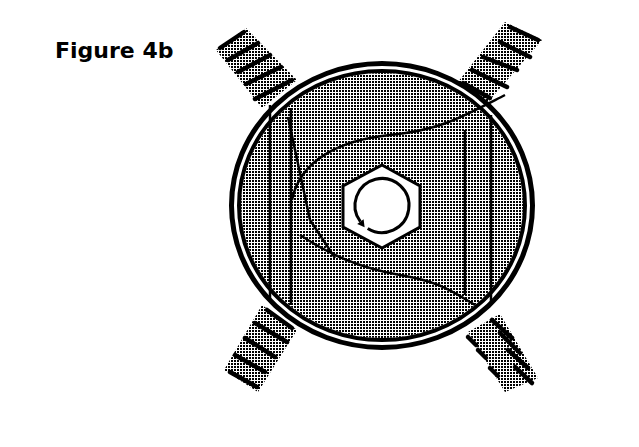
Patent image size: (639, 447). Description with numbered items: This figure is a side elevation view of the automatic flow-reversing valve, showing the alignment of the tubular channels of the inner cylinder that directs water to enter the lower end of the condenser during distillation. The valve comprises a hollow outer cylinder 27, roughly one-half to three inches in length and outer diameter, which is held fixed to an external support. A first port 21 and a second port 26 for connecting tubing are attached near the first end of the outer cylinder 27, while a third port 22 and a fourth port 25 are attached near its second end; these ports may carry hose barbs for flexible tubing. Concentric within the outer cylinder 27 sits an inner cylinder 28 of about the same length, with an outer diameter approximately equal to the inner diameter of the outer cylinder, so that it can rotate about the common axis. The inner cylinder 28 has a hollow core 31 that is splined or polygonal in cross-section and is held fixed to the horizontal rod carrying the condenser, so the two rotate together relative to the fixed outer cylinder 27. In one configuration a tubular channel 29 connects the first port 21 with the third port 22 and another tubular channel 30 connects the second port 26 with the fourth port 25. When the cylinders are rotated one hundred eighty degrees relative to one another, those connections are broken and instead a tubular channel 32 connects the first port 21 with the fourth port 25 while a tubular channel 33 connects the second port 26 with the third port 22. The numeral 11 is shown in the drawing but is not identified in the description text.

The housing 11 is at (245, 151).
The first port 21 is at (220, 344).
The third port 22 is at (245, 94).
The fourth port 25 is at (522, 101).
The second port 26 is at (518, 335).
The hollow outer cylinder 27 is at (222, 206).
The inner cylinder 28 is at (371, 312).
The tubular channel 29 is at (472, 175).
The tubular channel 30 is at (292, 280).
The hollow core 31 is at (374, 211).
The tubular channel 32 is at (395, 145).
The tubular channel 33 is at (323, 253).